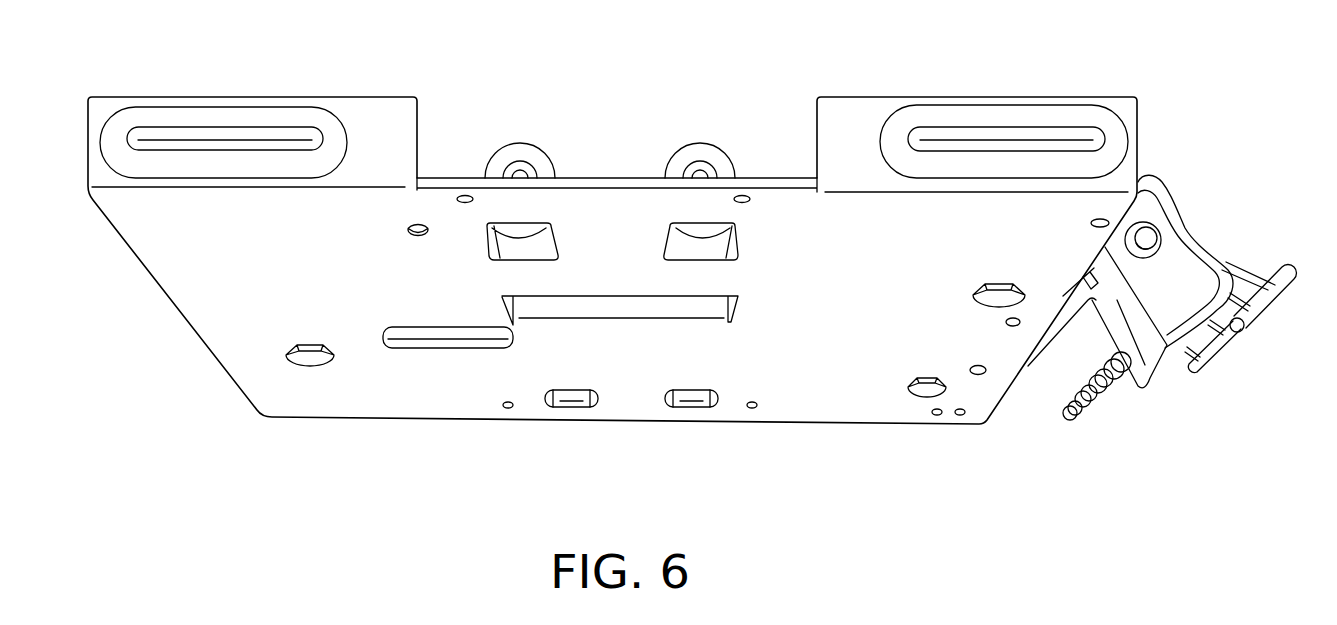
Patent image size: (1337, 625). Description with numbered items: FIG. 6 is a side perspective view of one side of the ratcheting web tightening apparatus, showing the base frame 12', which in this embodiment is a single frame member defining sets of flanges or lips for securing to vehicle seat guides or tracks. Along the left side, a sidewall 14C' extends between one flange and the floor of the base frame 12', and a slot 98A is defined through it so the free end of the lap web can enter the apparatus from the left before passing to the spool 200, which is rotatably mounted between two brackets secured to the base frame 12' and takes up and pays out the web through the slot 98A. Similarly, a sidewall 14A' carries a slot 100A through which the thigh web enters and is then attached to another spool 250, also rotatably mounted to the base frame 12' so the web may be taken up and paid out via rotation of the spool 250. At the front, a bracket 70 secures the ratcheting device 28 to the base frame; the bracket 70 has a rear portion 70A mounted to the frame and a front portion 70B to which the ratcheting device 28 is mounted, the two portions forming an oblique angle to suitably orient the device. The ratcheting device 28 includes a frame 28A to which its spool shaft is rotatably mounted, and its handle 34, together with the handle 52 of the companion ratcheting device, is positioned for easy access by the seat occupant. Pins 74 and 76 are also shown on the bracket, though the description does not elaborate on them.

The base frame 12' is at (612, 286).
The sidewall 14A' is at (976, 162).
The sidewall 14C' is at (250, 156).
The slot 98A is at (248, 137).
The slot 100A is at (998, 138).
The spool 200 is at (523, 152).
The spool 250 is at (703, 152).
The ratcheting device 28 is at (1200, 247).
The frame 28A is at (1179, 192).
The handle 34 is at (1275, 303).
The handle 52 is at (1220, 352).
The bracket 70 is at (1104, 364).
The rear portion 70A is at (1062, 325).
The front portion 70B is at (1118, 420).
The first detent pins 74 is at (1117, 393).
The second detent pins 76 is at (1093, 412).